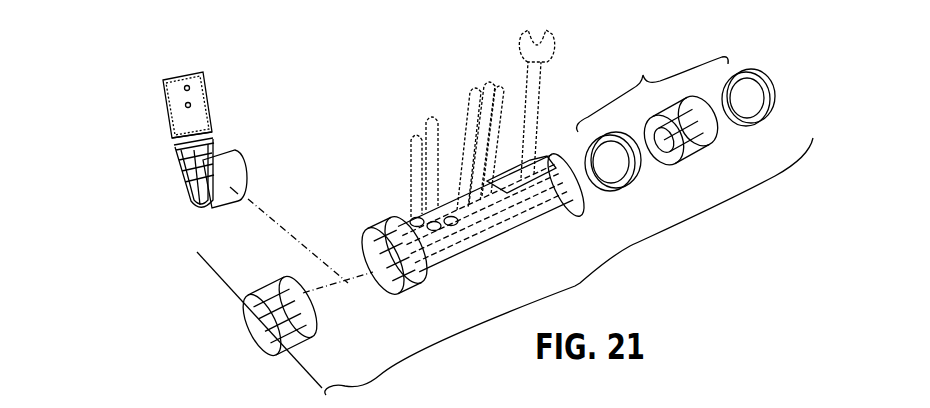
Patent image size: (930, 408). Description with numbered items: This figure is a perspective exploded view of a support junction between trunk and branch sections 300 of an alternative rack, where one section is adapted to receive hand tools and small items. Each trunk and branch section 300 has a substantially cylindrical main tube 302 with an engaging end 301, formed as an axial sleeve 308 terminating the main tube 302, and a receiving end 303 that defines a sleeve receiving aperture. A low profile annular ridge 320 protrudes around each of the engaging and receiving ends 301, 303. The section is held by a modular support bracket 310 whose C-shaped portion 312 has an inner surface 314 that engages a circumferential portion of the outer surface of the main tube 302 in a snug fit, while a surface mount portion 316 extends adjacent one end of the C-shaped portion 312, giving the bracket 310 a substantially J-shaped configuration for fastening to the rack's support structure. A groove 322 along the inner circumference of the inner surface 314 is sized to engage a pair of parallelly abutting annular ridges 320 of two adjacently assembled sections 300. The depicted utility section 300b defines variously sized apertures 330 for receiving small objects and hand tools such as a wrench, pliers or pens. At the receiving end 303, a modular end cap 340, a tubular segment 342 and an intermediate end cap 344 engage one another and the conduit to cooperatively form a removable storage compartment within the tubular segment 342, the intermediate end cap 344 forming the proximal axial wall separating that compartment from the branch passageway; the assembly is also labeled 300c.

The trunk and branch section 300 is at (257, 298).
The trunk and branch section capable of receiving hand tools 300b is at (527, 215).
The tool kit assembly 300c is at (817, 407).
The engaging end 301 is at (363, 257).
The main tube 302 is at (462, 217).
The receiving end 303 is at (556, 170).
The axial sleeve 308 is at (380, 240).
The modular support bracket 310 is at (205, 90).
The C-shaped portion 312 is at (242, 168).
The inner surface 314 is at (182, 167).
The surface mount portion 316 is at (180, 119).
The annular ridge 320 is at (320, 333).
The groove 322 is at (197, 163).
The apertures 330 is at (450, 223).
The modular end cap 340 is at (778, 103).
The tubular segment 342 is at (706, 143).
The intermediate end cap 344 is at (638, 187).